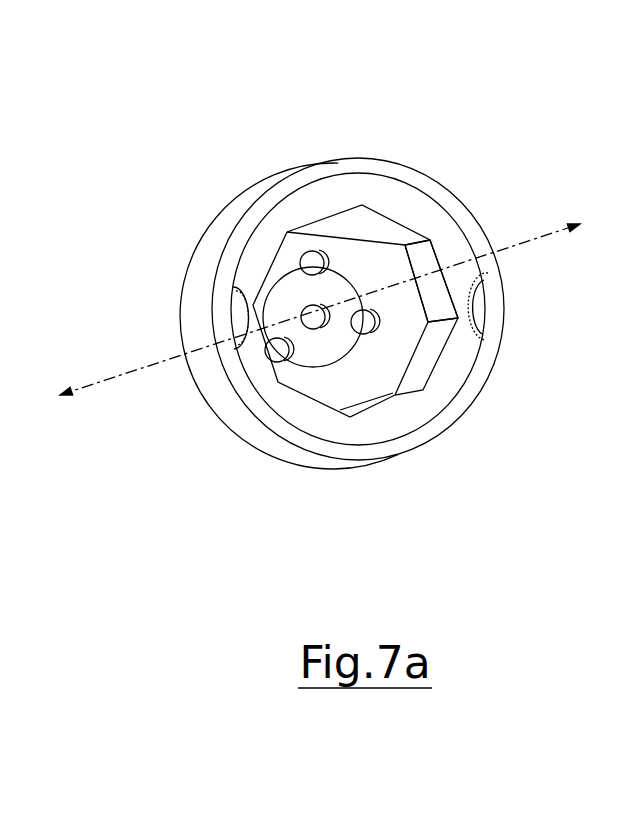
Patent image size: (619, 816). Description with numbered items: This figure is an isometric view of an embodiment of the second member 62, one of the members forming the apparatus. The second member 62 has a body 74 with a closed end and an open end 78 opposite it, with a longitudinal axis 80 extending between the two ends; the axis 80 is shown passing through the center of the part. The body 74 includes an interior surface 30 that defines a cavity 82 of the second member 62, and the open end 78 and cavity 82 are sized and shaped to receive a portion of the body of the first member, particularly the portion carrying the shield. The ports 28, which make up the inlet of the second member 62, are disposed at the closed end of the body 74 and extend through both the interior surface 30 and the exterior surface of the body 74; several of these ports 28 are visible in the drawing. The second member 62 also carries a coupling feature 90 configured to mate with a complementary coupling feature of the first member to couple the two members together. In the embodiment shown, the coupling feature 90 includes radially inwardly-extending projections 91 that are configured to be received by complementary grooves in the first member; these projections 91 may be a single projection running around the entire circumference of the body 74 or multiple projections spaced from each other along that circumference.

The port 28 is at (310, 262).
The interior surface 30 is at (347, 397).
The second member 62 is at (470, 170).
The body 74 is at (210, 252).
The open end 78 is at (332, 510).
The longitudinal axis 80 is at (556, 234).
The cavity 82 is at (381, 256).
The coupling feature 90 is at (430, 258).
The radially inwardly-extending projection 91 is at (233, 302).